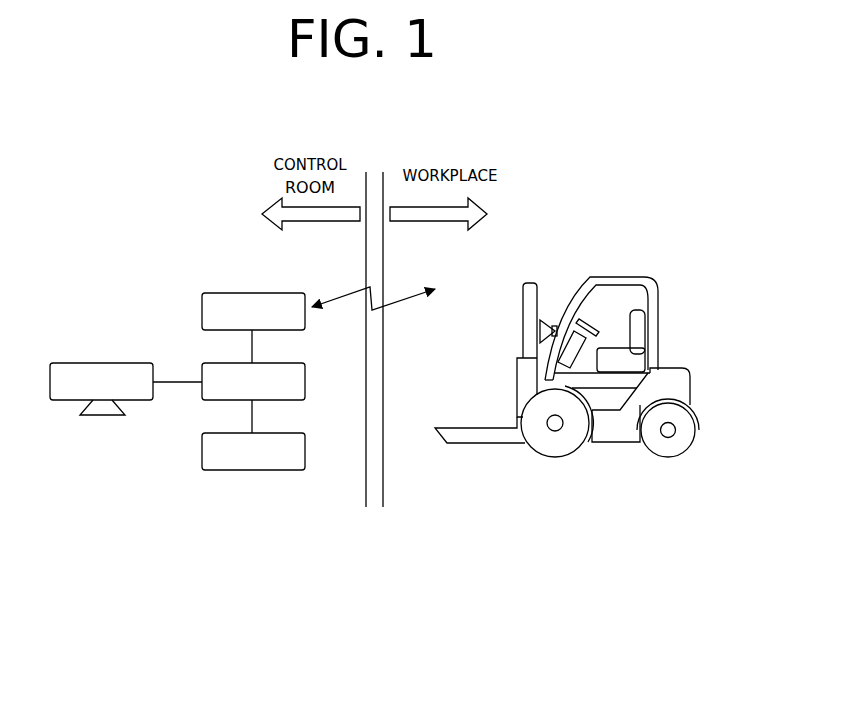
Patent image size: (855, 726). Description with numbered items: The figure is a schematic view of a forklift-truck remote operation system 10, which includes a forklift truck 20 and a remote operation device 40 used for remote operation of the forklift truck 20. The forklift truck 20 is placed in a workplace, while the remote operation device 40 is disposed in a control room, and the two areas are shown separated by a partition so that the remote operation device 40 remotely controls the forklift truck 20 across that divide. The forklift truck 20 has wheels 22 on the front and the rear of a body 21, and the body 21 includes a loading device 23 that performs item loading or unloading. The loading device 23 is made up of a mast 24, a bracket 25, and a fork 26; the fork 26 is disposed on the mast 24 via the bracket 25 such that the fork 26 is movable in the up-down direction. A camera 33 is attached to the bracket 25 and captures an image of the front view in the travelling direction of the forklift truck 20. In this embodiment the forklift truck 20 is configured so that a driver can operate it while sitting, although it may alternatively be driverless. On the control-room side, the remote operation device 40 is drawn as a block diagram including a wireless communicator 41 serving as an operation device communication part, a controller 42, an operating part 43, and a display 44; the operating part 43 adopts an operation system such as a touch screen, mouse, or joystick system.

The forklift-truck remote operation system 10 is at (632, 173).
The forklift truck 20 is at (653, 272).
The body 21 is at (668, 364).
The wheels 22 is at (565, 456).
The loading device 23 is at (510, 397).
The mast 24 is at (522, 303).
The bracket 25 is at (517, 378).
The fork 26 is at (482, 445).
The camera 33 is at (552, 326).
The remote operation device 40 is at (112, 272).
The wireless communicator 41 is at (273, 293).
The controller 42 is at (273, 363).
The operating part 43 is at (273, 433).
The display 44 is at (122, 363).